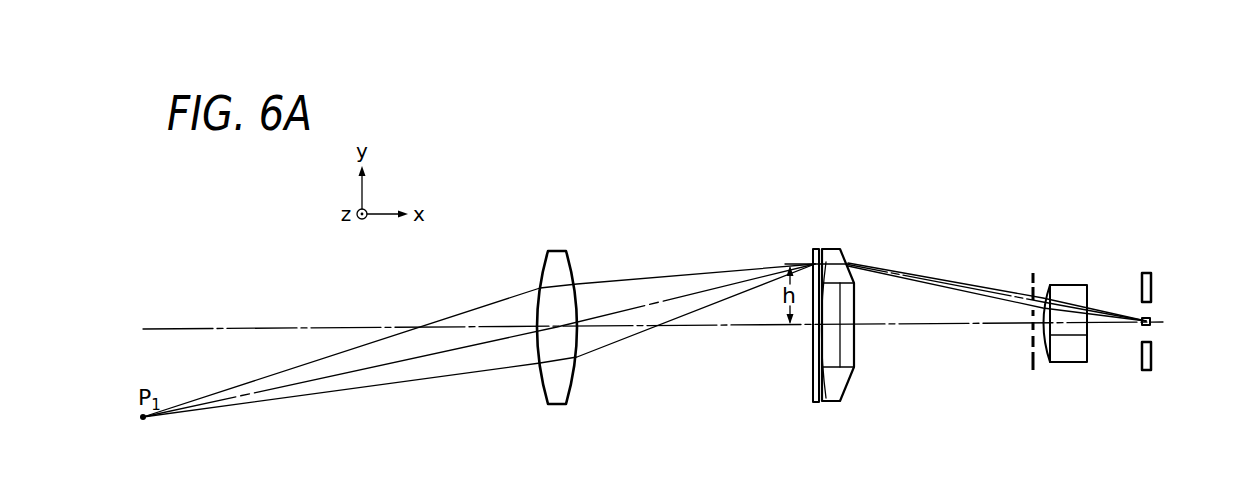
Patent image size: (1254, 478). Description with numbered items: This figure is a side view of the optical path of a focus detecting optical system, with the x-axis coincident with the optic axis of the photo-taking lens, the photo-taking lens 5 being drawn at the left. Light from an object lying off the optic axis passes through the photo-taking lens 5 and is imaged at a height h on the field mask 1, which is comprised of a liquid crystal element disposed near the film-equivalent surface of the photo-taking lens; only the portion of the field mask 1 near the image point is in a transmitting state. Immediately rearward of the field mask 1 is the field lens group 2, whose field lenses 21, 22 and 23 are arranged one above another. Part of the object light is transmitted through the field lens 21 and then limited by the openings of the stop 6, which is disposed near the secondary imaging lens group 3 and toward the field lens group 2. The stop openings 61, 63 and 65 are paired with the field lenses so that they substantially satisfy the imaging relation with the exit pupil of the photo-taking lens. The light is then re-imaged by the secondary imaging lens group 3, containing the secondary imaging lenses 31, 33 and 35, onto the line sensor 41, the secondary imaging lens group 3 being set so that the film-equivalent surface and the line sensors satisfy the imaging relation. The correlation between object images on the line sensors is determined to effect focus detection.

The field mask 1 is at (814, 248).
The field lens group 2 is at (866, 309).
The field lens 21 is at (846, 254).
The field lens 22 is at (847, 344).
The field lens 23 is at (845, 381).
The secondary imaging lens group 3 is at (1091, 318).
The secondary imaging lens 31 is at (1078, 292).
The secondary imaging lens 33 is at (1082, 330).
The secondary imaging lens 35 is at (1077, 358).
The objective lens 5 is at (557, 250).
The stop 6 is at (1008, 307).
The stop opening 61 is at (1027, 298).
The stop opening 63 is at (1031, 321).
The stop opening 65 is at (1031, 346).
The line sensor 41 is at (1152, 323).